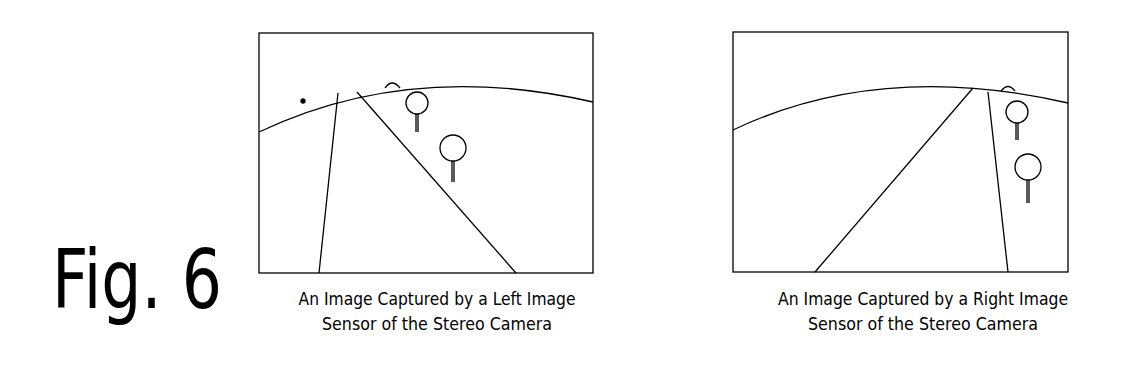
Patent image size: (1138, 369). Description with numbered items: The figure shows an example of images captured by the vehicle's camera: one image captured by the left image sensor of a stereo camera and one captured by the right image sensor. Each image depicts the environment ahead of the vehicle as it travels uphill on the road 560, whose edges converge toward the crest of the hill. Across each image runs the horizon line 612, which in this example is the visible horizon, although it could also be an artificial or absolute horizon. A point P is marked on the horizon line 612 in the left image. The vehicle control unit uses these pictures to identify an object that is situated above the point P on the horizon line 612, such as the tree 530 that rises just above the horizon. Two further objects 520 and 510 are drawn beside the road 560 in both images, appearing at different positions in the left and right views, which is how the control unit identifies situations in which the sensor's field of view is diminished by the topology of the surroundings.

The tree (far object) 510 is at (466, 152).
The tree (near object) 520 is at (428, 107).
The tree 530 is at (401, 85).
The road 560 is at (340, 167).
The horizon line 612 is at (533, 92).
The point P is at (303, 100).